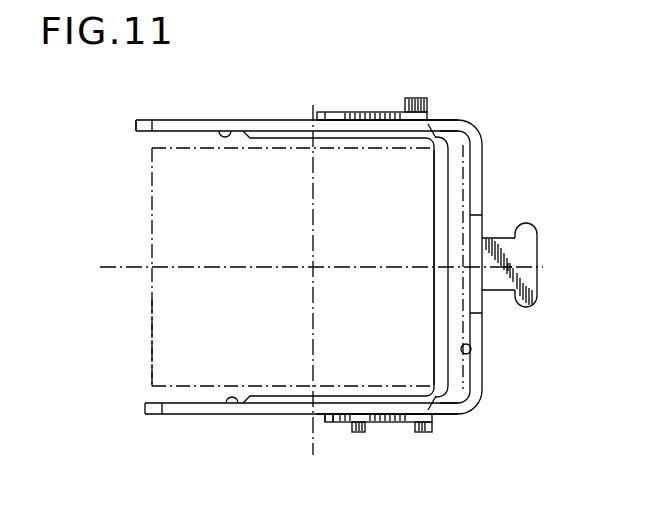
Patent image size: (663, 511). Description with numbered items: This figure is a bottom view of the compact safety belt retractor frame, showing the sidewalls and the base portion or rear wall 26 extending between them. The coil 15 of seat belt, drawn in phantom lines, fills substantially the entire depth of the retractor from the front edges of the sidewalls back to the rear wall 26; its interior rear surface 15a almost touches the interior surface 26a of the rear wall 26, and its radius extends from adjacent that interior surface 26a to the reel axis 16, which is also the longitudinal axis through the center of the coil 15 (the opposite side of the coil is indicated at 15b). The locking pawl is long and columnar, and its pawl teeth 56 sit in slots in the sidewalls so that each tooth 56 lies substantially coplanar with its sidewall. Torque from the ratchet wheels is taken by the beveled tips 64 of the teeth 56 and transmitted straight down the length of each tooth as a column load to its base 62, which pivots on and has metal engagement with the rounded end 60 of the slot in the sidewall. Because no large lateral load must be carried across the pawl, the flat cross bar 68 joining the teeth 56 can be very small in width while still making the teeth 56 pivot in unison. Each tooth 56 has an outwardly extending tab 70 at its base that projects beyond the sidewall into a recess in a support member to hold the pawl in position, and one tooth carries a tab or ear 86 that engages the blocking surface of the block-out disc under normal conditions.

The coil 15 is at (258, 208).
The interior rear surface 15a is at (471, 328).
The frame side wall 15b is at (151, 324).
The axis 16 is at (314, 228).
The rear wall 26 is at (483, 160).
The interior surface 26a is at (471, 347).
The pawl tooth 56 is at (375, 112).
The rounded end 60 is at (445, 122).
The base 62 is at (428, 123).
The tip 64 is at (332, 424).
The cross bar 68 is at (437, 205).
The tab 70 is at (418, 96).
The tab or ear 86 is at (358, 433).